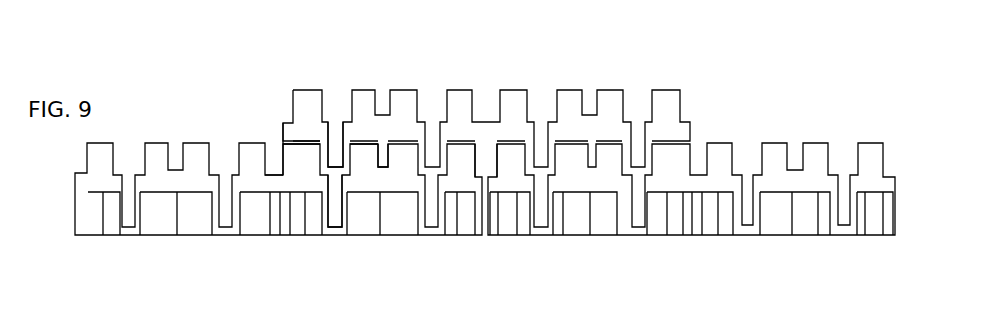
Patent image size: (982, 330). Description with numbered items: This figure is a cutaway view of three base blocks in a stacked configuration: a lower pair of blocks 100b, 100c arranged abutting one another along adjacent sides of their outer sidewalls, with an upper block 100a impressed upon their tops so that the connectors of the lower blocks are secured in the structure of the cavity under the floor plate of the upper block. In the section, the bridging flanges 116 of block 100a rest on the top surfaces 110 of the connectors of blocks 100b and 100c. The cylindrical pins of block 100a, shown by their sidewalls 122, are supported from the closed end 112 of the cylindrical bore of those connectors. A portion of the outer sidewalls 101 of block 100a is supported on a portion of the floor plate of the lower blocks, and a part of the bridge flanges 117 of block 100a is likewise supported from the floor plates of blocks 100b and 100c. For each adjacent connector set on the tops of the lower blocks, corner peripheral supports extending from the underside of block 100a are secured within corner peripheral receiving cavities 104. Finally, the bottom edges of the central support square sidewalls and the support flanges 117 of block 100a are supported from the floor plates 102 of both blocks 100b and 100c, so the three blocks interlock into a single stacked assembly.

The block 100a is at (282, 75).
The block 100b is at (247, 243).
The block 100c is at (712, 245).
The outer sidewalls 101 is at (287, 163).
The floor plates 102 is at (279, 179).
The corner peripheral receiving cavities 104 is at (385, 157).
The top surfaces 110 is at (303, 147).
The closed end 112 is at (336, 183).
The bridging flanges 116 is at (316, 137).
The bridge flanges 117 is at (494, 163).
The sidewalls 122 is at (345, 155).